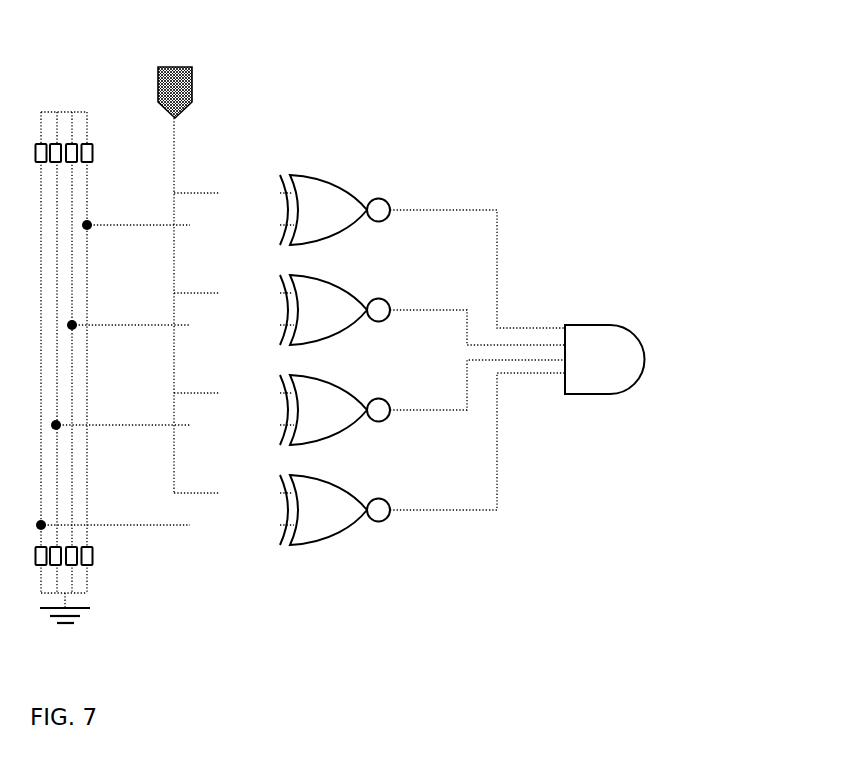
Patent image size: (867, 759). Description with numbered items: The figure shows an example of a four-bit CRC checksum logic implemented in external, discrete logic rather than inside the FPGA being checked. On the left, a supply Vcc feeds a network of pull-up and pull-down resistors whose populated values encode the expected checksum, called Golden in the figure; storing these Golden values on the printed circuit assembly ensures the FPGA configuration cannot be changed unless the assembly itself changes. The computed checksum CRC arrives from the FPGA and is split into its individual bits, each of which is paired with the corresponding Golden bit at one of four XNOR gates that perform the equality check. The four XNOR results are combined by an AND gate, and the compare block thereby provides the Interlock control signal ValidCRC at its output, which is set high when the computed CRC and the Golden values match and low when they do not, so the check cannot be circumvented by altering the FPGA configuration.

The pull-up supply Vcc is at (80, 83).
The computed CRC checksum CRC is at (222, 256).
The expected CRC checksum Golden is at (167, 360).
The equality check logic XNOR is at (335, 360).
The Interlock control signal ValidCRC is at (817, 360).